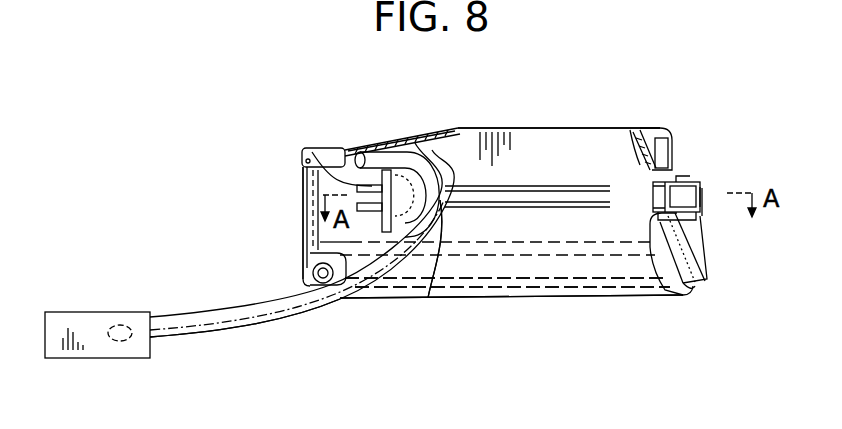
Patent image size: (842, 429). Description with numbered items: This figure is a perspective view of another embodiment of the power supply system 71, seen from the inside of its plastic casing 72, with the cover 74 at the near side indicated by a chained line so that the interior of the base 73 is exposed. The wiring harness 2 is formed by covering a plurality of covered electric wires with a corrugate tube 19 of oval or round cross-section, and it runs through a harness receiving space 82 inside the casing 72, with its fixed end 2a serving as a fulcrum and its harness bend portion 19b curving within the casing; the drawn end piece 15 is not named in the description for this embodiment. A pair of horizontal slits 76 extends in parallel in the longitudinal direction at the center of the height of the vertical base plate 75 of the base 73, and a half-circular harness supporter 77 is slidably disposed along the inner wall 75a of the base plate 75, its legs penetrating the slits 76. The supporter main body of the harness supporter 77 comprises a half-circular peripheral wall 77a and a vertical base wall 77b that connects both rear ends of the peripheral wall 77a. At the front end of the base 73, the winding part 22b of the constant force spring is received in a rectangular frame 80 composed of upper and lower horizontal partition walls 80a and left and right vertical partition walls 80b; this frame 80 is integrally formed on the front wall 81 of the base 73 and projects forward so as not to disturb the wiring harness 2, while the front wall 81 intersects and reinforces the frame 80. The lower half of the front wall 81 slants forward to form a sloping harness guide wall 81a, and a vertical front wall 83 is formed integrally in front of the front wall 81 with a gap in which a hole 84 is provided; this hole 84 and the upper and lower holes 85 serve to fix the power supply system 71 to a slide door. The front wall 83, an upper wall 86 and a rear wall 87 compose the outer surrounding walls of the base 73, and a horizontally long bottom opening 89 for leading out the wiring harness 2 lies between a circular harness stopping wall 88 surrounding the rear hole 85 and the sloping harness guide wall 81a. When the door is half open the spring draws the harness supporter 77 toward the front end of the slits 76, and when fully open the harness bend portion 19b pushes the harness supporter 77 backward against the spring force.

The wiring harness 2 is at (236, 311).
The fixed end 2a is at (352, 152).
The connector 15 is at (84, 312).
The corrugate tube 19 is at (225, 338).
The harness bend portion 19b is at (428, 298).
The winding part 22b is at (689, 181).
The power supply system 71 is at (618, 62).
The casing 72 is at (630, 372).
The base 73 is at (554, 298).
The cover 74 is at (605, 298).
The vertical base plate 75 is at (622, 128).
The inner wall 75a is at (560, 178).
The horizontal slits 76 is at (518, 186).
The harness supporter 77 is at (305, 151).
The half-circular peripheral wall 77a is at (418, 156).
The vertical base wall 77b is at (373, 178).
The rectangular frame 80 is at (687, 181).
The horizontal partition walls 80a is at (702, 187).
The vertical partition walls 80b is at (703, 192).
The front wall 81 is at (668, 296).
The sloping harness guide wall 81a is at (703, 286).
The harness receiving space 82 is at (445, 156).
The vertical front wall 83 is at (705, 268).
The hole 84 is at (686, 232).
The holes 85 is at (654, 130).
The upper wall 86 is at (489, 128).
The rear wall 87 is at (303, 214).
The circular harness stopping wall 88 is at (348, 262).
The bottom opening 89 is at (494, 298).